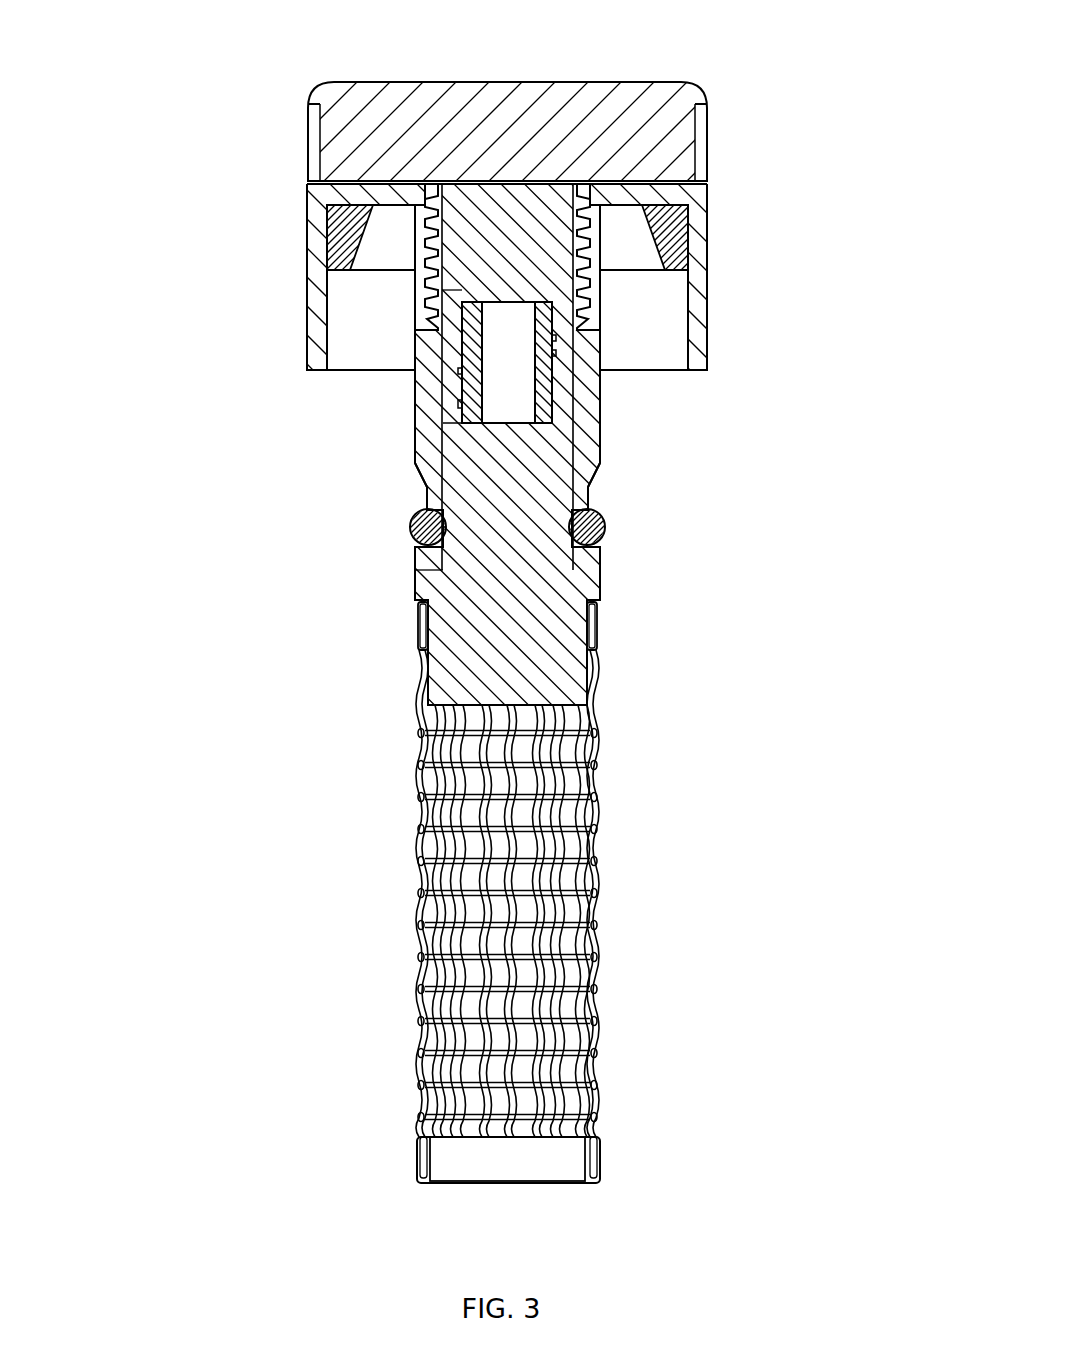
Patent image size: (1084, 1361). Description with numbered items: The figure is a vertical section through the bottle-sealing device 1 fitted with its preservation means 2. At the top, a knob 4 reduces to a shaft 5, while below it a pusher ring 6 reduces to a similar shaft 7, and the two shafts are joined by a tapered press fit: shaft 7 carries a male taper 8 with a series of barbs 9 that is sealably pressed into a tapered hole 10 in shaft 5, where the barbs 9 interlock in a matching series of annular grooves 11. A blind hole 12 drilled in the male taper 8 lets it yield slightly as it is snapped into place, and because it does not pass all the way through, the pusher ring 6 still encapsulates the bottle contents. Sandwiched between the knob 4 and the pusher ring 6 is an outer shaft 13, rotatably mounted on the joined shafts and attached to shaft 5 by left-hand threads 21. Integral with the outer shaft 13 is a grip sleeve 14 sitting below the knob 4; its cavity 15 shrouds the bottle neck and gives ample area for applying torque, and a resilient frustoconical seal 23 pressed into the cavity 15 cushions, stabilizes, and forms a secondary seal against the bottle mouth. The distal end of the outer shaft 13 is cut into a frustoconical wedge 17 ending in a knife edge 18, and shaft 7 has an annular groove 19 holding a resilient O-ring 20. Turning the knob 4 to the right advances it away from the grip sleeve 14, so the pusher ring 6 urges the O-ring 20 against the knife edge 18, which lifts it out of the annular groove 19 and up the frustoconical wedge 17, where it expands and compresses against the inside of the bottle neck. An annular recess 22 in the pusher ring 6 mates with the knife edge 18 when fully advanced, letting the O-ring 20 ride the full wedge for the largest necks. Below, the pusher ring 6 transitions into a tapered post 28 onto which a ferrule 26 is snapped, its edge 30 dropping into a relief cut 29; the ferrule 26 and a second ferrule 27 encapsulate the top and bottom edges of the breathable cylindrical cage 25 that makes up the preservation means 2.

The bottle-sealing device 1 is at (244, 81).
The preservation means 2 is at (681, 954).
The knob 4 is at (650, 75).
The shaft 5 is at (537, 233).
The pusher ring 6 is at (427, 573).
The shaft 7 is at (513, 487).
The male taper 8 is at (480, 337).
The barbs 9 is at (463, 414).
The tapered hole 10 is at (497, 287).
The annular grooves 11 is at (470, 318).
The hole 12 is at (517, 350).
The outer shaft 13 is at (600, 437).
The grip sleeve 14 is at (705, 213).
The cavity 15 is at (654, 373).
The frustoconical wedge 17 is at (420, 476).
The knife edge 18 is at (412, 542).
The annular groove 19 is at (580, 514).
The O-ring 20 is at (600, 515).
The left-hand threads 21 is at (437, 240).
The annular recess 22 is at (574, 568).
The frustoconical seal 23 is at (652, 230).
The cylindrical cage 25 is at (420, 932).
The ferrule 26 is at (600, 625).
The ferrule 27 is at (418, 1151).
The tapered post 28 is at (500, 697).
The relief cut 29 is at (438, 650).
The edge 30 is at (585, 652).